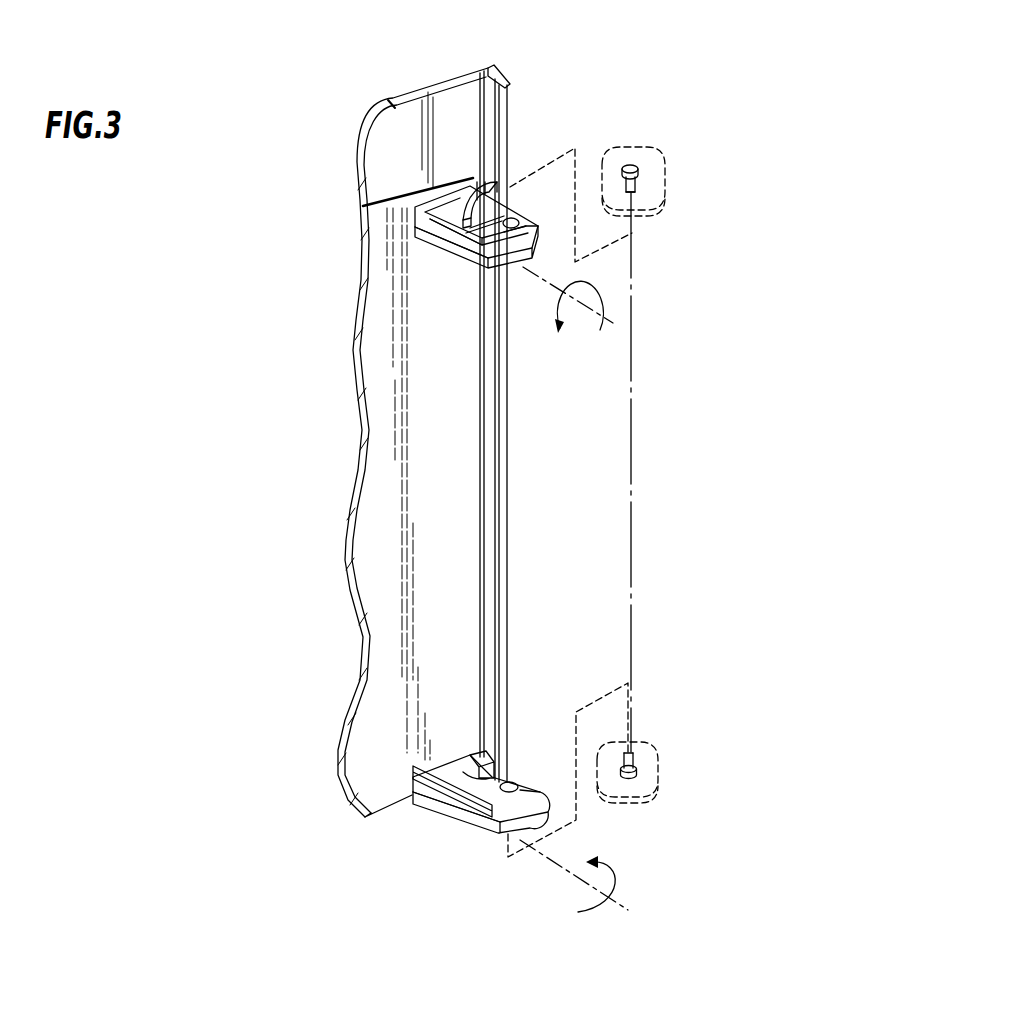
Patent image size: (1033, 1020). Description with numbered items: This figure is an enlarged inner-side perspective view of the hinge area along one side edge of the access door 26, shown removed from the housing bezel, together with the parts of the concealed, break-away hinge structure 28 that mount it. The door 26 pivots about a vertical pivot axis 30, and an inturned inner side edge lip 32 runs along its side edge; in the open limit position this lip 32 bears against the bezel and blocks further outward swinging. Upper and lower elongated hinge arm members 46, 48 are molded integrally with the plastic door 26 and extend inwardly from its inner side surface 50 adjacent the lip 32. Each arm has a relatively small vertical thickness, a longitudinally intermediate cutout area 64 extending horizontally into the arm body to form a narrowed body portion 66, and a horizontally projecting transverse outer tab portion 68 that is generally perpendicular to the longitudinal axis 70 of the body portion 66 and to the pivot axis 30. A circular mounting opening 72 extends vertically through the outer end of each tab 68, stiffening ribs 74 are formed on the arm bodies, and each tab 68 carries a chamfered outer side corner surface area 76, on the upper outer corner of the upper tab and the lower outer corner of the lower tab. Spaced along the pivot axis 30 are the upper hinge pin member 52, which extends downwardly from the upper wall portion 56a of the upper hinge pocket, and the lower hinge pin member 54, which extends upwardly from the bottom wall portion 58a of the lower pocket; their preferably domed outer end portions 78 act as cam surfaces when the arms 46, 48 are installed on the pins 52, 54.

The access door 26 is at (346, 537).
The hinge structure 28 is at (590, 98).
The pivot axis 30 is at (632, 415).
The inner side edge lip 32 is at (524, 423).
The upper hinge arm member 46 is at (414, 228).
The lower hinge arm member 48 is at (425, 793).
The inner side surface 50 is at (453, 488).
The upper hinge pin member 52 is at (642, 187).
The lower hinge pin member 54 is at (639, 762).
The upper wall portion 56a is at (664, 157).
The bottom wall portion 58a is at (650, 803).
The cutout area 64 is at (483, 177).
The narrowed body portion 66 is at (452, 244).
The transverse outer tab portion 68 is at (518, 232).
The longitudinal axis 70 is at (600, 330).
The circular mounting opening 72 is at (518, 225).
The stiffening ribs 74 is at (490, 270).
The chamfered outer side corner surface area 76 is at (513, 243).
The outer end portions 78 is at (632, 193).